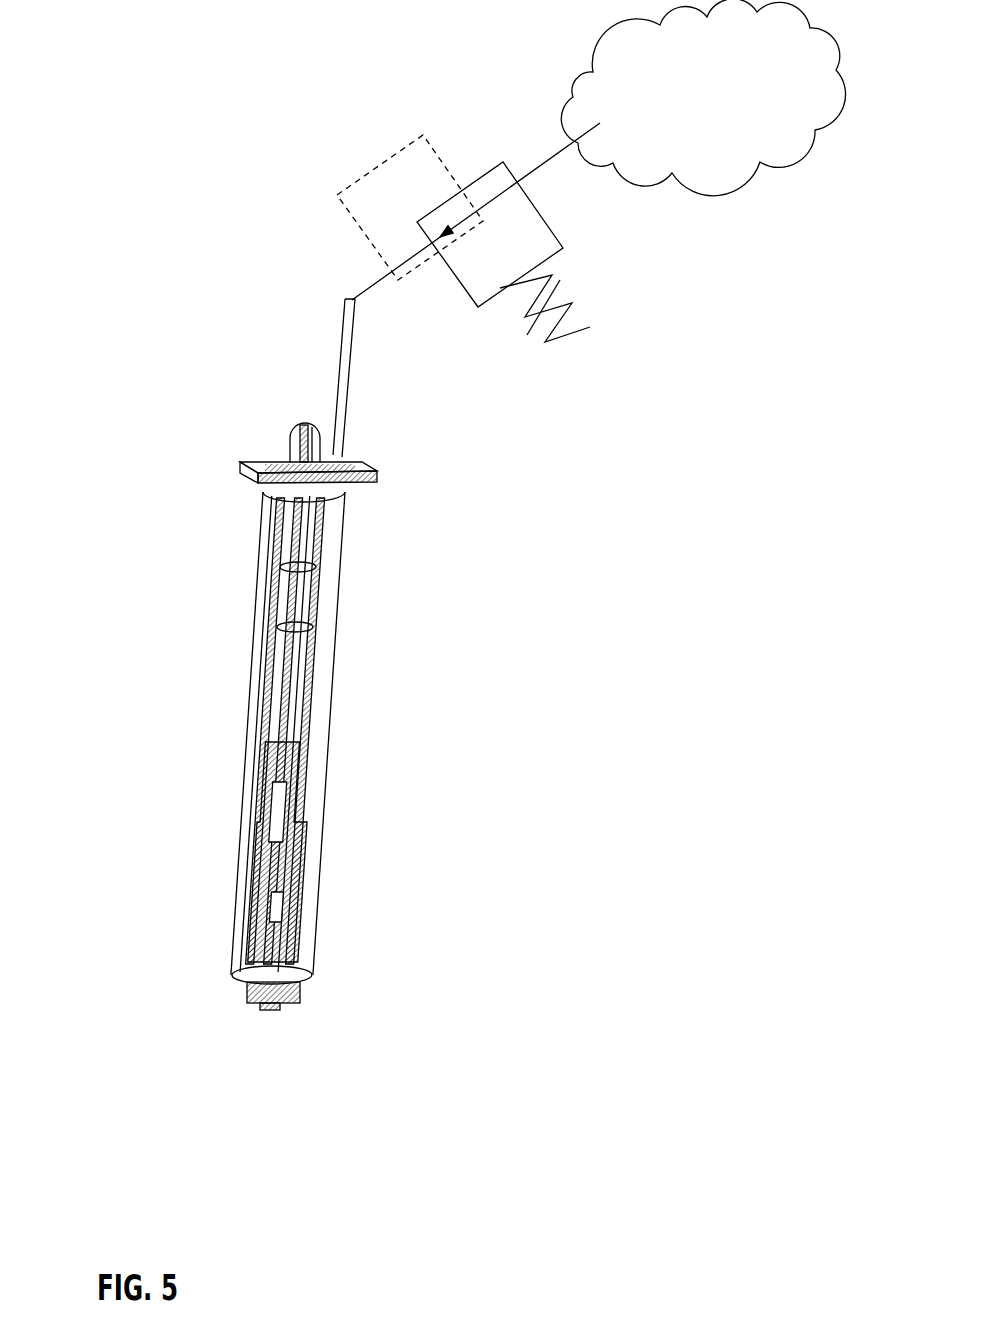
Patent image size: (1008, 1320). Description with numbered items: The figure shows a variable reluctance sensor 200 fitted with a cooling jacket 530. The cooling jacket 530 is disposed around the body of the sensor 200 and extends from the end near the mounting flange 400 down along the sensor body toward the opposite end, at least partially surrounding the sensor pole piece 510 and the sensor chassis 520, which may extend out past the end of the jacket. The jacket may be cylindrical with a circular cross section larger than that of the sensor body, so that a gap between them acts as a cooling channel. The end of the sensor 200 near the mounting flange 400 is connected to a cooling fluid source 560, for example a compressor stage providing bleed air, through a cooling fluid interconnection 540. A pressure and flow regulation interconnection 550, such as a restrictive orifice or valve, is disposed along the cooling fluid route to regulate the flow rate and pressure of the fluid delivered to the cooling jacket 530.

The VR sensor 200 is at (126, 278).
The mounting flange 400 is at (232, 481).
The sensor pole piece 510 is at (246, 1024).
The sensor chassis 520 is at (308, 998).
The cooling jacket 530 is at (336, 764).
The cooling fluid interconnection 540 is at (365, 405).
The pressure and flow regulation interconnection 550 is at (580, 251).
The cooling fluid source 560 is at (703, 98).